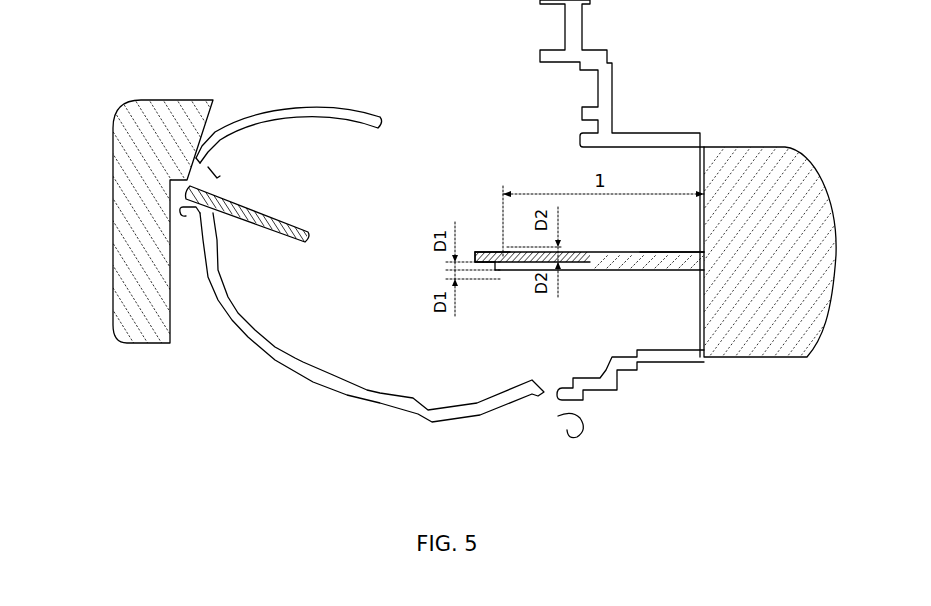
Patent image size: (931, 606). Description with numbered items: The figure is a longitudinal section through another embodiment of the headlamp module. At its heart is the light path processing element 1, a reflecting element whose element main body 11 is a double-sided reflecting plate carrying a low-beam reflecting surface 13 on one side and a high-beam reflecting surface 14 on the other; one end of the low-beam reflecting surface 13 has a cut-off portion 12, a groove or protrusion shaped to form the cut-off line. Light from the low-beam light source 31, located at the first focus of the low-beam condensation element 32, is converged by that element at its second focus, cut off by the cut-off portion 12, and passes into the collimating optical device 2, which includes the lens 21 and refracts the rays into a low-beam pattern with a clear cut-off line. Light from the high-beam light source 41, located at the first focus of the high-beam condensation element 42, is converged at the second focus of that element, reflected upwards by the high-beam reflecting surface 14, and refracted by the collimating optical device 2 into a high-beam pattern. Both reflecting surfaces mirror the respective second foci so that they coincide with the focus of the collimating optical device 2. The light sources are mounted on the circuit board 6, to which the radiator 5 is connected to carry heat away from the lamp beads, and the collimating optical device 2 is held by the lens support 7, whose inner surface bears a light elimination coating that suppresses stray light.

The light path processing element 1 is at (575, 272).
The element main body 11 is at (662, 258).
The cut-off portion 12 is at (495, 266).
The low-beam reflecting surface 13 is at (590, 270).
The high-beam reflecting surface 14 is at (496, 252).
The collimating optical device 2 is at (748, 362).
The lens 21 is at (739, 174).
The low-beam light source 31 is at (271, 229).
The low-beam condensation element 32 is at (298, 370).
The high-beam light source 41 is at (214, 171).
The high-beam condensation element 42 is at (333, 117).
The radiator 5 is at (128, 336).
The circuit board 6 is at (218, 203).
The lens support 7 is at (603, 100).